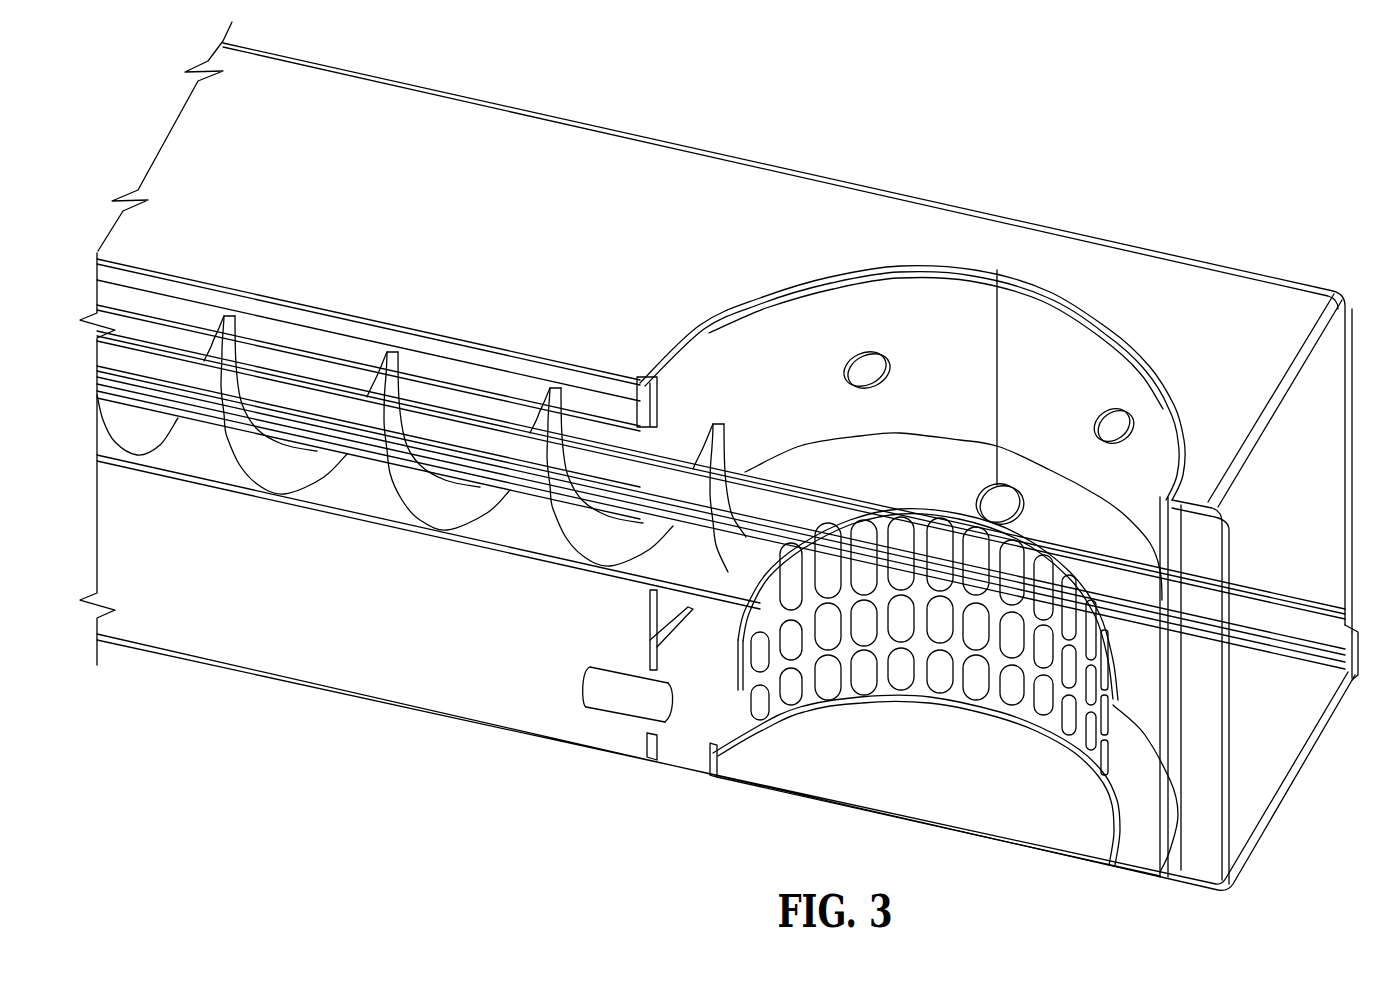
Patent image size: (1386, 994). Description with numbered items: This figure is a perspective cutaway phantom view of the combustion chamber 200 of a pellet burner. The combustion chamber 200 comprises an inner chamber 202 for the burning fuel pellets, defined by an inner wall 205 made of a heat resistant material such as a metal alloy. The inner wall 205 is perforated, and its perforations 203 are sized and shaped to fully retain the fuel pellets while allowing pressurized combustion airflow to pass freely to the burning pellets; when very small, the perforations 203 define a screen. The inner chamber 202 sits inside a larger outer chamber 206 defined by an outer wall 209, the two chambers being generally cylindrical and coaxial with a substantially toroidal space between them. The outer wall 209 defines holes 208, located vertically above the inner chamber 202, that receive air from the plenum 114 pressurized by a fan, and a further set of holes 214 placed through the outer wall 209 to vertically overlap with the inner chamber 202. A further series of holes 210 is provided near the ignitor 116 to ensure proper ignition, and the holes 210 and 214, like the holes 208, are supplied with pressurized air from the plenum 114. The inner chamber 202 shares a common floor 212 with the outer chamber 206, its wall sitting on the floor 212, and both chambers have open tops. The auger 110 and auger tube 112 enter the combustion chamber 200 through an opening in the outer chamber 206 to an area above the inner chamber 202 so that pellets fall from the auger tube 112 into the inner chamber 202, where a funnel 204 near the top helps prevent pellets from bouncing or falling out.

The combustion chamber 200 is at (760, 252).
The plenum 114 is at (1265, 293).
The auger tube 112 is at (203, 487).
The auger 110 is at (310, 477).
The ignitor 116 is at (583, 687).
The outer wall 209 is at (690, 363).
The funnel 204 is at (932, 440).
The holes 208 is at (867, 351).
The outer chamber 206 is at (826, 428).
The holes 214 is at (1027, 513).
The perforations 203 is at (857, 673).
The inner chamber 202 is at (988, 748).
The inner wall 205 is at (1117, 690).
The floor 212 is at (828, 785).
The holes 210 is at (650, 640).